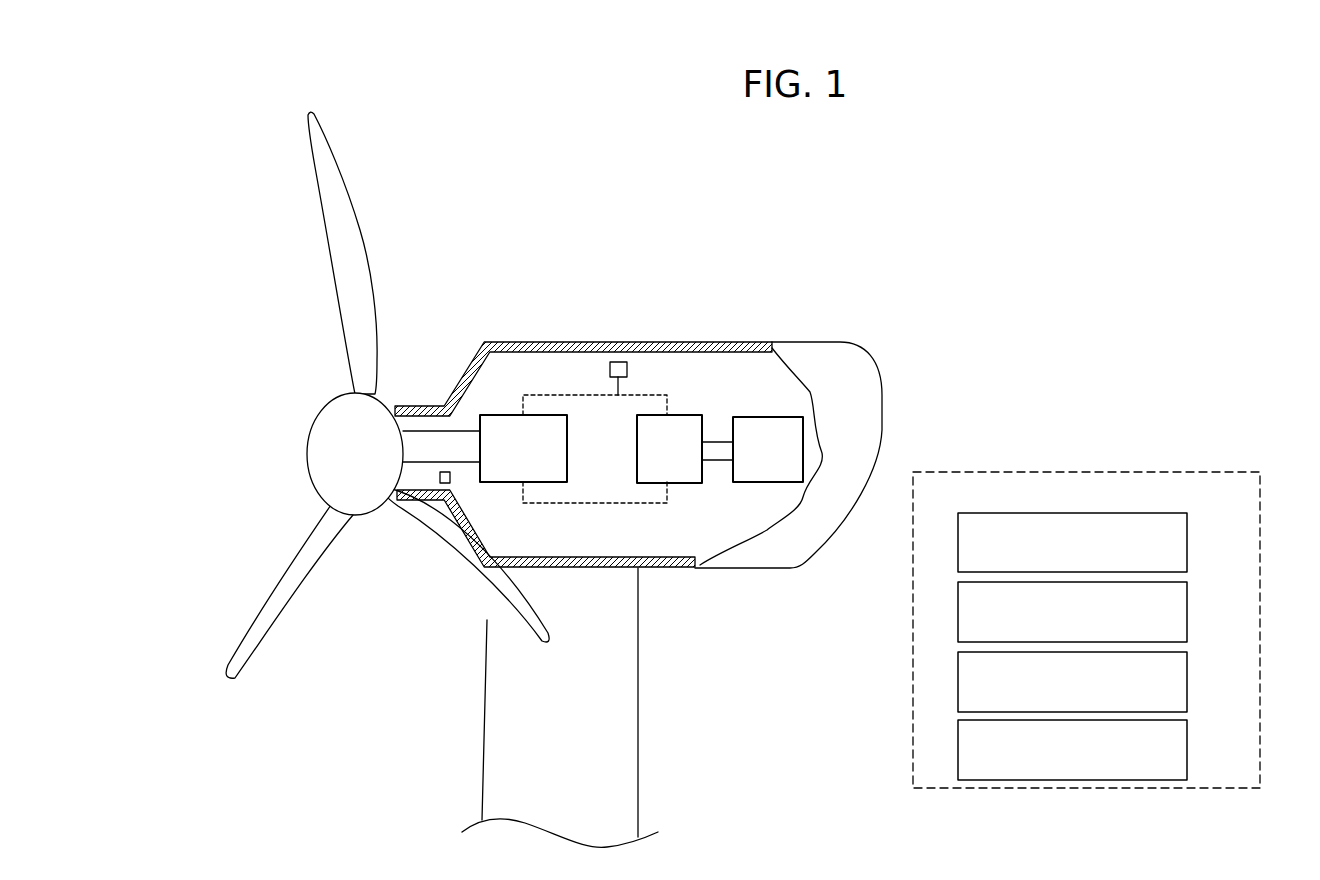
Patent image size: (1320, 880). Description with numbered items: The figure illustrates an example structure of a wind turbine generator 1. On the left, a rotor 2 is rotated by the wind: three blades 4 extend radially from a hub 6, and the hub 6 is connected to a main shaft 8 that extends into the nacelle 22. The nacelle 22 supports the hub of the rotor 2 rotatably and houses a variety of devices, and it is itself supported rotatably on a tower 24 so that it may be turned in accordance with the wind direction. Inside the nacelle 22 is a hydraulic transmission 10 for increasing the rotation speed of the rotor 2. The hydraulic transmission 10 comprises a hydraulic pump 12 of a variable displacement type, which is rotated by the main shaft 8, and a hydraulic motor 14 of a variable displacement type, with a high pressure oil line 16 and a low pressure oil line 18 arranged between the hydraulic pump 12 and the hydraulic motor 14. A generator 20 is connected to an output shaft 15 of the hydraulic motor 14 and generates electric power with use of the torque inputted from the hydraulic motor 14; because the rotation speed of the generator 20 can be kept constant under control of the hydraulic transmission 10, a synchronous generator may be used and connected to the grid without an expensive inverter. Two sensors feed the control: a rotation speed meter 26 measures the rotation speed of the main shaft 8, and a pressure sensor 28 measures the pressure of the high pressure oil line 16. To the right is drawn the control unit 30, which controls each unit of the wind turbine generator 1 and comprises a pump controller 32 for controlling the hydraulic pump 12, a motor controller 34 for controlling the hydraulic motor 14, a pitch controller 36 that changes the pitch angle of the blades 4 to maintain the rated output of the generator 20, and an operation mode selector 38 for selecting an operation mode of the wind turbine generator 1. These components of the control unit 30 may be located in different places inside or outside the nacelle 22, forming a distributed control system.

The wind turbine generator 1 is at (803, 241).
The rotor 2 is at (258, 552).
The blade 4 is at (348, 260).
The hub 6 is at (330, 448).
The main shaft 8 is at (430, 430).
The hydraulic transmission 10 is at (645, 524).
The hydraulic pump 12 is at (503, 415).
The hydraulic motor 14 is at (682, 415).
The output shaft 15 is at (715, 440).
The high pressure oil line 16 is at (597, 395).
The low pressure oil line 18 is at (603, 503).
The generator 20 is at (755, 417).
The nacelle 22 is at (865, 377).
The tower 24 is at (600, 748).
The rotation speed meter 26 is at (451, 476).
The pressure sensor 28 is at (627, 370).
The control unit 30 is at (1185, 472).
The pump controller 32 is at (1188, 543).
The motor controller 34 is at (1188, 610).
The pitch controller 36 is at (1188, 680).
The operation mode selector 38 is at (1188, 754).